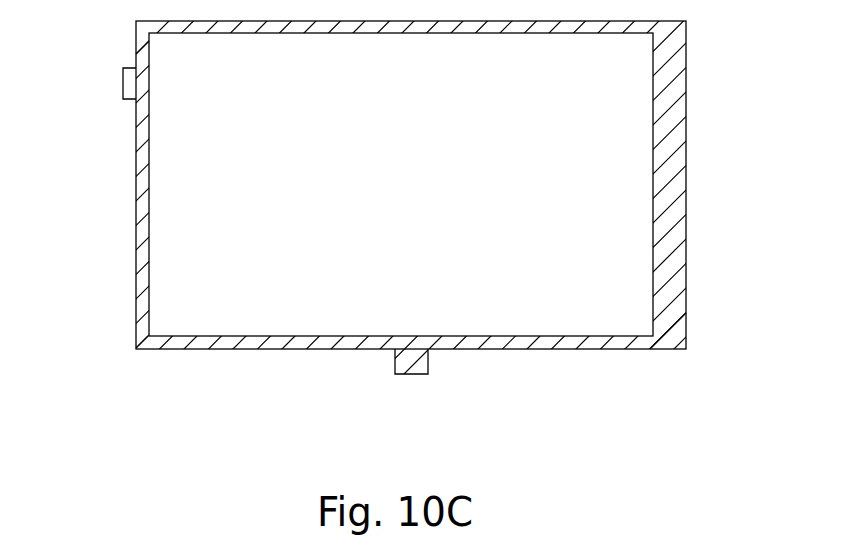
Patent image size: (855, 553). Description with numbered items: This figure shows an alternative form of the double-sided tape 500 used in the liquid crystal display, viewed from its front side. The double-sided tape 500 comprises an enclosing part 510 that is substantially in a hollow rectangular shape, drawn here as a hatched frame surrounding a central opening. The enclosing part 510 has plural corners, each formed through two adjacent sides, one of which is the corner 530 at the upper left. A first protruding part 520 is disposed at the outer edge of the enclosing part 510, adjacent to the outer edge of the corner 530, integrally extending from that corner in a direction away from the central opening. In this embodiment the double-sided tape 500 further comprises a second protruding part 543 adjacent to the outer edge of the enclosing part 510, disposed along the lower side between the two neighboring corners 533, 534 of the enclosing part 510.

The double-sided tape 500 is at (427, 276).
The enclosing part 510 is at (680, 58).
The first protruding part 520 is at (130, 79).
The corner 530 is at (143, 55).
The corner 533 is at (672, 338).
The corner 534 is at (143, 345).
The second protruding part 543 is at (410, 368).